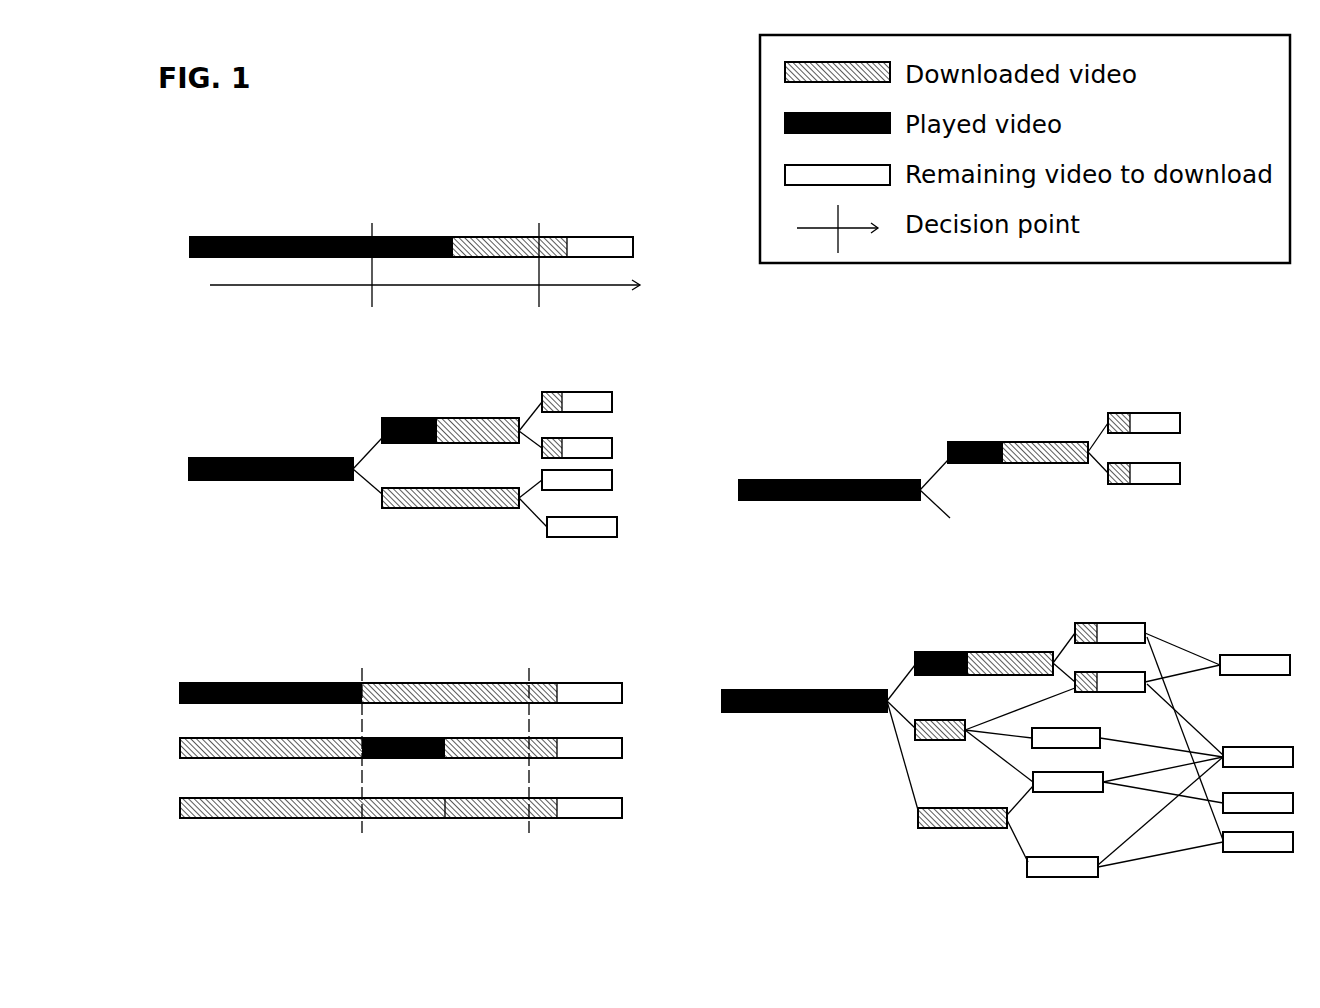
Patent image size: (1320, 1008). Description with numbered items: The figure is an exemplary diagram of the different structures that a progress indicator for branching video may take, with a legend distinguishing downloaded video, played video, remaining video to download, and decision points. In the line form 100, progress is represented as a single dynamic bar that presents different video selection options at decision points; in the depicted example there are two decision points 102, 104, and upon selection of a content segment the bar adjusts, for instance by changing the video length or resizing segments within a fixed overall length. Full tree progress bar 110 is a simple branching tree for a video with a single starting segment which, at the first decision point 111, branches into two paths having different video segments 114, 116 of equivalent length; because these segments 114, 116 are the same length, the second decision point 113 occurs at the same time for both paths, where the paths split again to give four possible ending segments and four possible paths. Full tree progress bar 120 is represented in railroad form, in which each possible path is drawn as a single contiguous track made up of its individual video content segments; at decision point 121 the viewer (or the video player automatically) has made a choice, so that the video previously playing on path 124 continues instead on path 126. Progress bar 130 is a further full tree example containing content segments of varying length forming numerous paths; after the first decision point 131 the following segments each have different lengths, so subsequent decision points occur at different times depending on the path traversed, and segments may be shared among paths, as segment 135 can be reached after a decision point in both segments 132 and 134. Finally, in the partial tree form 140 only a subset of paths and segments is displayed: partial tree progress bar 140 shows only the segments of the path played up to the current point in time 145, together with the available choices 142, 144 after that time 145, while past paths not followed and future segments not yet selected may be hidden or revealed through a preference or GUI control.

The line form 100 is at (300, 201).
The decision point 102 is at (415, 334).
The decision point 104 is at (529, 334).
The full tree progress bar 110 is at (347, 387).
The first decision point 111 is at (352, 483).
The second decision point 113 is at (520, 515).
The video segment 114 is at (427, 417).
The video segment 116 is at (423, 512).
The full tree progress bar (railroad form) 120 is at (478, 617).
The decision point 121 is at (377, 862).
The path 124 is at (172, 695).
The path 126 is at (175, 753).
The progress bar 130 is at (873, 621).
The first decision point 131 is at (882, 723).
The segment 132 is at (940, 740).
The segment 134 is at (932, 837).
The segment 135 is at (1050, 793).
The partial tree form 140 is at (910, 386).
The available choice 142 is at (1157, 408).
The available choice 144 is at (1142, 485).
The current point in time 145 is at (1015, 432).